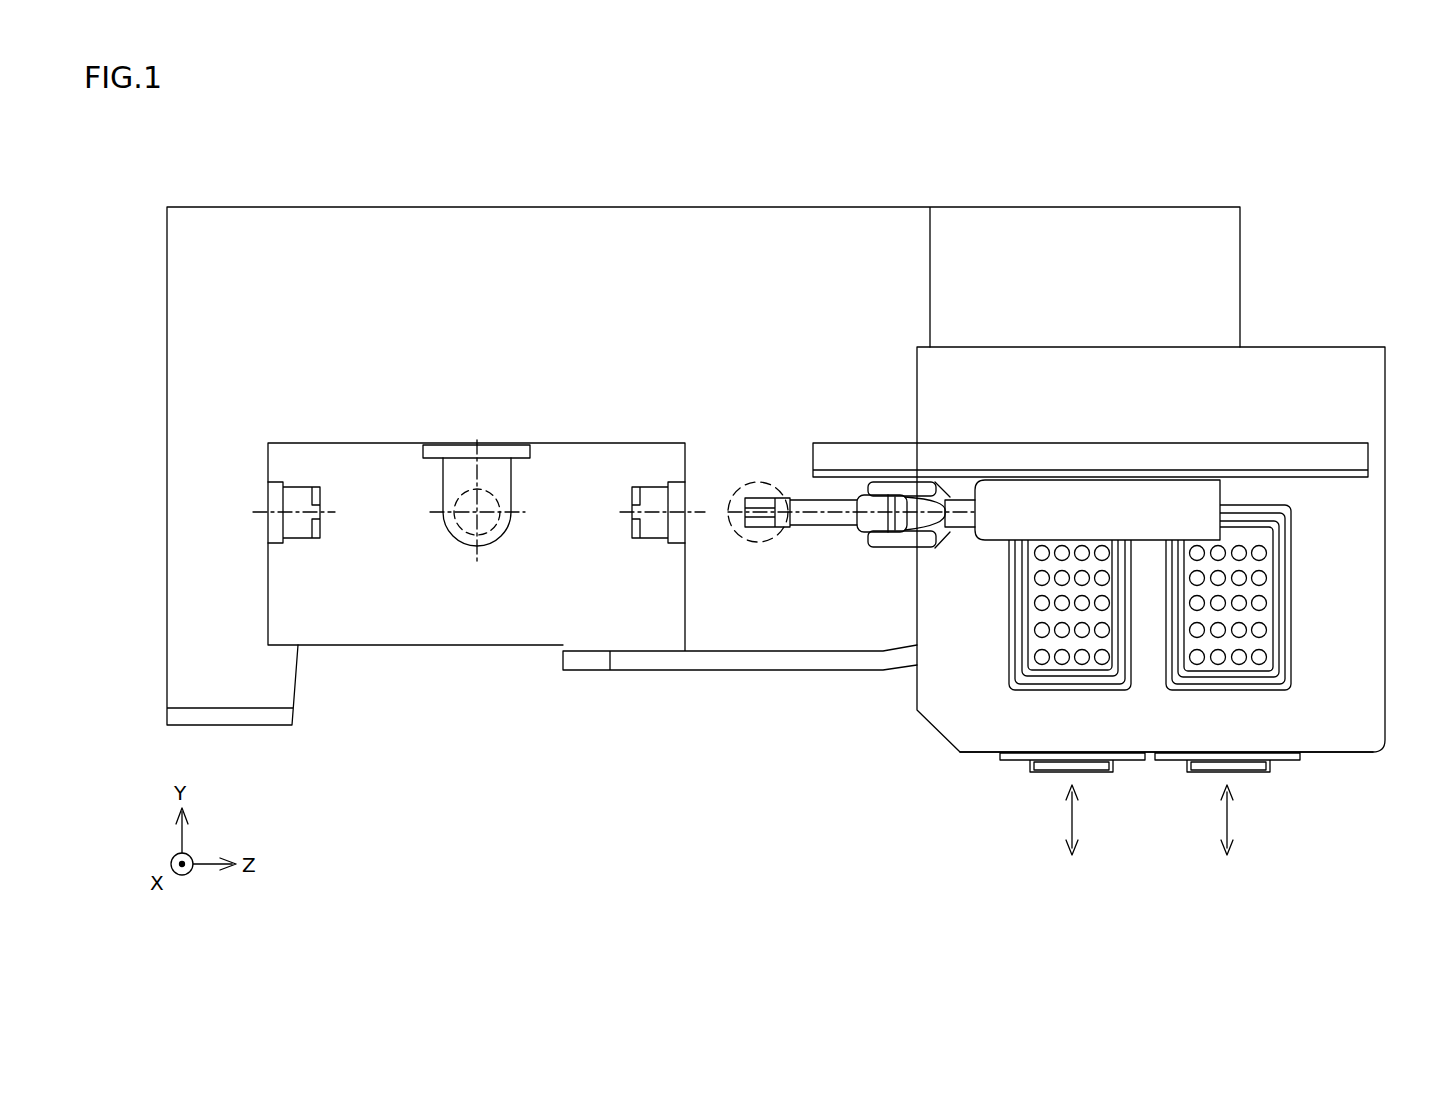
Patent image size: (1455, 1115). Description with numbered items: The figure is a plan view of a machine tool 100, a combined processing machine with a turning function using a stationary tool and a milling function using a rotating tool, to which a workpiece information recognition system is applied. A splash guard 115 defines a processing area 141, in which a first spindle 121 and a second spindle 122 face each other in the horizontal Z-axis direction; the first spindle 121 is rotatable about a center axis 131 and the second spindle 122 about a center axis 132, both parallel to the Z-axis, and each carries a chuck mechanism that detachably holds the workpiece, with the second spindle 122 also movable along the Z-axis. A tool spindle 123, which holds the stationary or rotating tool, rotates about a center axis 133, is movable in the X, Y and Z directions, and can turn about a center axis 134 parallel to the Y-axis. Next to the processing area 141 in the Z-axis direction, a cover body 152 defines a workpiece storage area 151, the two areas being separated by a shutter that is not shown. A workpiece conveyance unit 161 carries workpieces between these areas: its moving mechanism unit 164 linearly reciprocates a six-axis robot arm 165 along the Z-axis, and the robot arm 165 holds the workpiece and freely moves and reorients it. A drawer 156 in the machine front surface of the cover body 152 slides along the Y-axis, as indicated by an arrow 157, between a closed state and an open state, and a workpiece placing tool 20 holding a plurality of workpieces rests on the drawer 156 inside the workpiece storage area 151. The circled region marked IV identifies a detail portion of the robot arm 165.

The machine tool 100 is at (671, 424).
The splash guard 115 is at (165, 567).
The first spindle 121 is at (276, 492).
The second spindle 122 is at (677, 497).
The tool spindle 123 is at (441, 488).
The center axis 131 is at (329, 512).
The center axis 132 is at (692, 512).
The center axis 133 is at (480, 505).
The center axis 134 is at (477, 427).
The processing area 141 is at (476, 628).
The workpiece storage area 151 is at (970, 728).
The cover body 152 is at (1385, 592).
The drawer 156 is at (1292, 676).
The arrow 157 is at (1075, 815).
The workpiece conveyance unit 161 is at (982, 443).
The moving mechanism unit 164 is at (1355, 457).
The robot arm 165 is at (822, 530).
The workpiece placing tool 20 is at (1025, 693).
The section IV is at (758, 542).